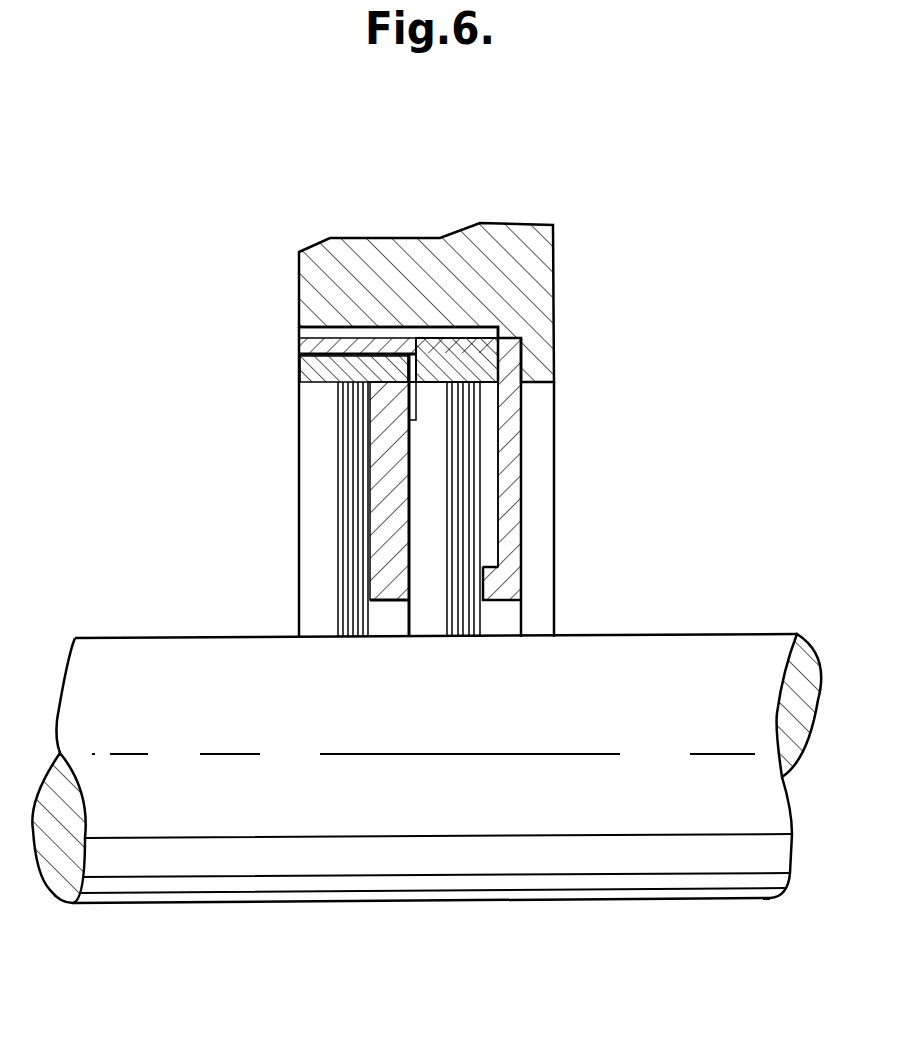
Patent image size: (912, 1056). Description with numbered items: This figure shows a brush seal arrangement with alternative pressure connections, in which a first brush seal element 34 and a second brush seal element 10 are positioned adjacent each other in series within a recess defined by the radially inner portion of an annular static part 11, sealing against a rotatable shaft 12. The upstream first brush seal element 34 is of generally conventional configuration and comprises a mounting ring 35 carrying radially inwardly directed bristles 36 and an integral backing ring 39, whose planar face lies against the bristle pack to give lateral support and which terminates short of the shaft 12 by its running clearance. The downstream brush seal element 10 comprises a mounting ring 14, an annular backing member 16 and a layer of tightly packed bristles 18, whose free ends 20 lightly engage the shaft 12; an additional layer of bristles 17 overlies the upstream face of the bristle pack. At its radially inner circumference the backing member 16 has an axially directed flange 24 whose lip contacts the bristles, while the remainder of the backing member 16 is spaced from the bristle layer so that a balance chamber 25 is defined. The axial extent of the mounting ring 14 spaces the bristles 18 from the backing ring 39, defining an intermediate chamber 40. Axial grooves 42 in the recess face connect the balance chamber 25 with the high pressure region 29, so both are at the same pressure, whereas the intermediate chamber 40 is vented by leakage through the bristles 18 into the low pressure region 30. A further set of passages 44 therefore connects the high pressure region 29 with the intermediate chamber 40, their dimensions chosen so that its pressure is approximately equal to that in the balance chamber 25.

The brush seal element 10 is at (528, 482).
The static part 11 is at (553, 247).
The rotatable shaft 12 is at (220, 855).
The mounting ring 14 is at (424, 357).
The backing member 16 is at (512, 422).
The additional layer of bristles 17 is at (365, 368).
The bristles 18 is at (443, 590).
The free ends of the bristles 20 is at (467, 637).
The annular flange 24 is at (483, 583).
The annular chamber 25 is at (487, 525).
The region of high fluid pressure 29 is at (88, 540).
The low pressure region 30 is at (830, 423).
The first brush seal element 34 is at (335, 445).
The mounting ring 35 is at (307, 391).
The bristles 36 is at (348, 515).
The backing ring 39 is at (383, 547).
The annular chamber 40 is at (435, 615).
The passages or grooves 42 is at (307, 337).
The further set of passages 44 is at (307, 361).